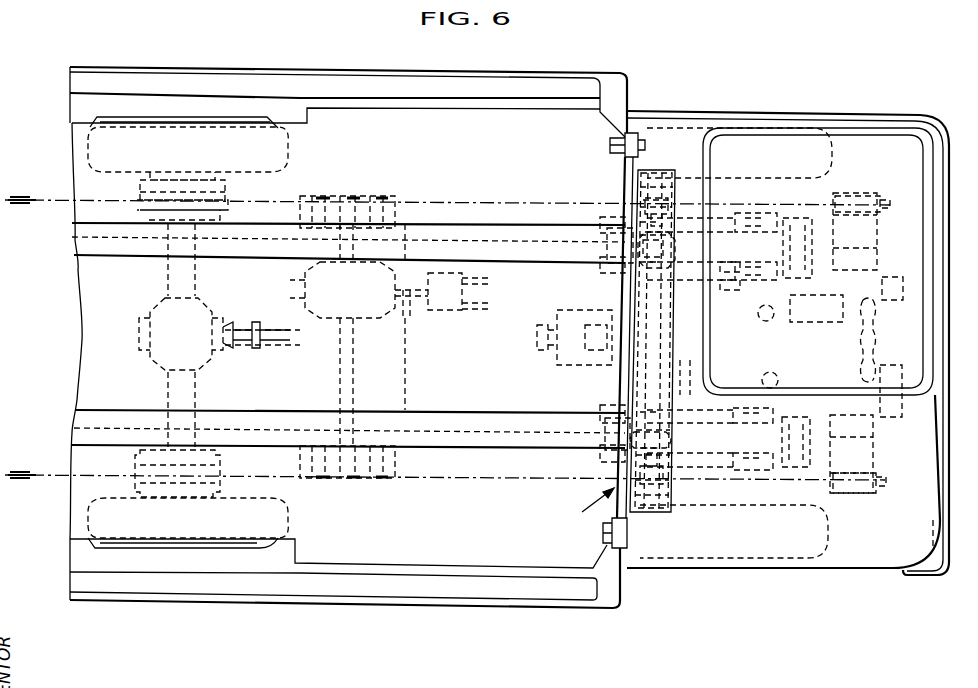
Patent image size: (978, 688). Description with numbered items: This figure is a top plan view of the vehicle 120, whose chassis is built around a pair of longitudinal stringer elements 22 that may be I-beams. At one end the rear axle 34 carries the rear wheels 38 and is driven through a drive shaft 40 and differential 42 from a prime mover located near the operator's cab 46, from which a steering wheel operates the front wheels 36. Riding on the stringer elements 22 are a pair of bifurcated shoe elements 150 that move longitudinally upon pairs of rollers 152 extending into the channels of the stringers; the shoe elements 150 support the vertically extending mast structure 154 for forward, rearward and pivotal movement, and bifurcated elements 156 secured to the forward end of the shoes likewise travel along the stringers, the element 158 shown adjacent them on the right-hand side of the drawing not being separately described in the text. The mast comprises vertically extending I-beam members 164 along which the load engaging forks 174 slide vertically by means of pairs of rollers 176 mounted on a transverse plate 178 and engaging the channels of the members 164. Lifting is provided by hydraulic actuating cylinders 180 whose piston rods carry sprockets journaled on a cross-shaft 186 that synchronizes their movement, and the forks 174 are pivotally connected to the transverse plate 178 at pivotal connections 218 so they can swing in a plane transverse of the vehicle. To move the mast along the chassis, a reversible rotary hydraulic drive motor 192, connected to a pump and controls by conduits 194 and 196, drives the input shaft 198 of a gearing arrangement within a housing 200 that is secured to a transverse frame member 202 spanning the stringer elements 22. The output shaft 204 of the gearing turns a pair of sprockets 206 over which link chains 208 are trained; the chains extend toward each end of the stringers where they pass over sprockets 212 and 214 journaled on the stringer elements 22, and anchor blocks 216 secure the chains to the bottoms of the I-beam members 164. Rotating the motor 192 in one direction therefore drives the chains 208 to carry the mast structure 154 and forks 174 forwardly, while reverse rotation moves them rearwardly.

The longitudinal stringer elements 22 is at (75, 248).
The rear axle 34 is at (170, 392).
The front wheels 36 is at (766, 135).
The rear wheels 38 is at (96, 118).
The drive shaft 40 is at (270, 344).
The differential 42 is at (160, 305).
The operator's cab 46 is at (868, 132).
The vehicle 120 is at (587, 62).
The bifurcated shoe elements 150 is at (600, 220).
The rollers 152 is at (612, 263).
The mast structure 154 is at (603, 372).
The bifurcated elements 156 is at (776, 224).
The drive unit 158 is at (818, 268).
The I-beam members 164 is at (637, 180).
The load engaging forks 174 is at (335, 77).
The rollers 176 is at (648, 170).
The transverse plate 178 is at (614, 372).
The hydraulic actuating cylinders 180 is at (672, 437).
The cross-shaft 186 is at (673, 398).
The rotary hydraulic drive motor 192 is at (455, 305).
The conduit 194 is at (494, 306).
The conduit 196 is at (494, 281).
The input shaft 198 is at (408, 300).
The housing 200 is at (300, 284).
The transverse frame member 202 is at (292, 383).
The output shaft 204 is at (348, 386).
The sprockets 206 is at (363, 194).
The link chains 208 is at (482, 201).
The sprockets 212 is at (13, 192).
The sprockets 214 is at (832, 208).
The anchor blocks 216 is at (640, 199).
The pivotal connections 218 is at (612, 143).